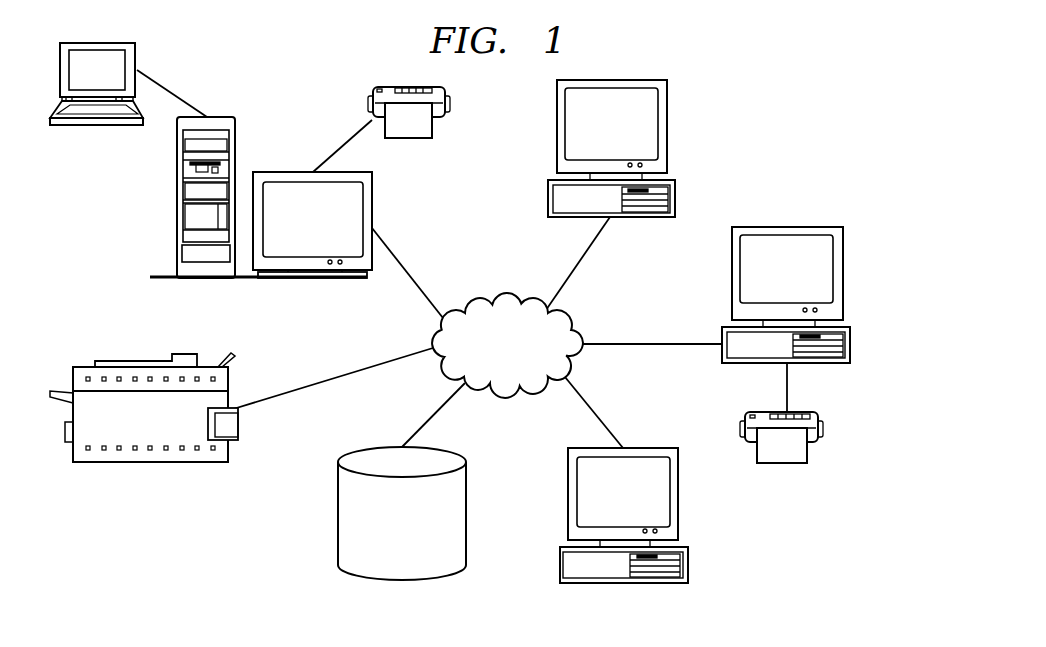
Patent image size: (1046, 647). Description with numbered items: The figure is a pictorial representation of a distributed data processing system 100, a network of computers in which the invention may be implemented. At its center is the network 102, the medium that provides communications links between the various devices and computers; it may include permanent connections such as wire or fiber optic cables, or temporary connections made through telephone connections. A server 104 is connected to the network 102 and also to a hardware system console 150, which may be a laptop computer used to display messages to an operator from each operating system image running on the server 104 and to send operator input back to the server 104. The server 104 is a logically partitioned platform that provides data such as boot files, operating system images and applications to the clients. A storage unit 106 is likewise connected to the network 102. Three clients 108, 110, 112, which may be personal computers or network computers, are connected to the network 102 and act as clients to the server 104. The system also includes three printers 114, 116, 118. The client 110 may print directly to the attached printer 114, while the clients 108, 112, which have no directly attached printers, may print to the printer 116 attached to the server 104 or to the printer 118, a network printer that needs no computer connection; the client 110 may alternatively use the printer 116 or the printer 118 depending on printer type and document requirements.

The distributed data processing system 100 is at (778, 147).
The network 102 is at (527, 360).
The server 104 is at (333, 228).
The storage unit 106 is at (423, 533).
The client 108 is at (634, 139).
The client 110 is at (807, 287).
The client 112 is at (642, 505).
The printer 114 is at (822, 427).
The printer 116 is at (448, 103).
The printer 118 is at (128, 433).
The hardware system console 150 is at (77, 82).